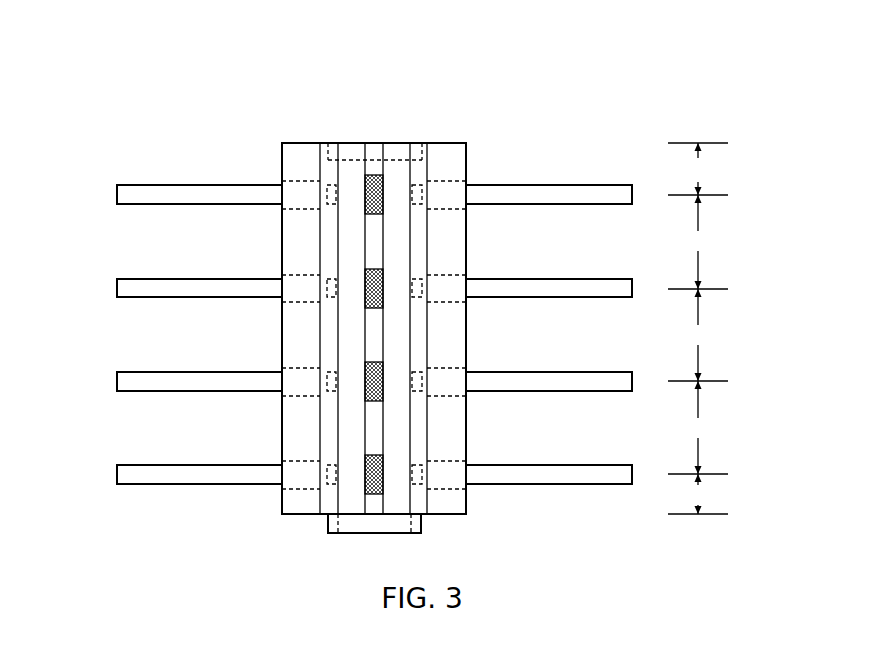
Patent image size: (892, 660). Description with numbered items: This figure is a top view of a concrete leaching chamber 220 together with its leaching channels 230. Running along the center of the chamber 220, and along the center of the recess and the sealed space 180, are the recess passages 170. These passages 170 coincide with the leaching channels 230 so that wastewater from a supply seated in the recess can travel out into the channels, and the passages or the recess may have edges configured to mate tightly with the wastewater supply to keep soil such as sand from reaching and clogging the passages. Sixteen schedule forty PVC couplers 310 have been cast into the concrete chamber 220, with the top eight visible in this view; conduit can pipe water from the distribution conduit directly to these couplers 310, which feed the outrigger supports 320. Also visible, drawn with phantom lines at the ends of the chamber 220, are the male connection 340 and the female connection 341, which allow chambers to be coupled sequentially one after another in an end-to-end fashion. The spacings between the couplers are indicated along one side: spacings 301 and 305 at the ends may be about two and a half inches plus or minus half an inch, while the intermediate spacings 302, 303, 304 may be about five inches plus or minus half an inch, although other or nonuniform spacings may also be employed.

The recess passages 170 is at (373, 470).
The sealed space 180 is at (377, 140).
The chamber 220 is at (455, 502).
The leaching channels 230 is at (542, 484).
The spacing 301 is at (698, 169).
The spacing 302 is at (698, 242).
The spacing 303 is at (698, 335).
The spacing 304 is at (698, 427).
The spacing 305 is at (698, 494).
The schedule 40 PVC couplers 310 is at (447, 181).
The outrigger supports 320 is at (242, 183).
The male connection 340 is at (359, 522).
The female connection 341 is at (365, 155).